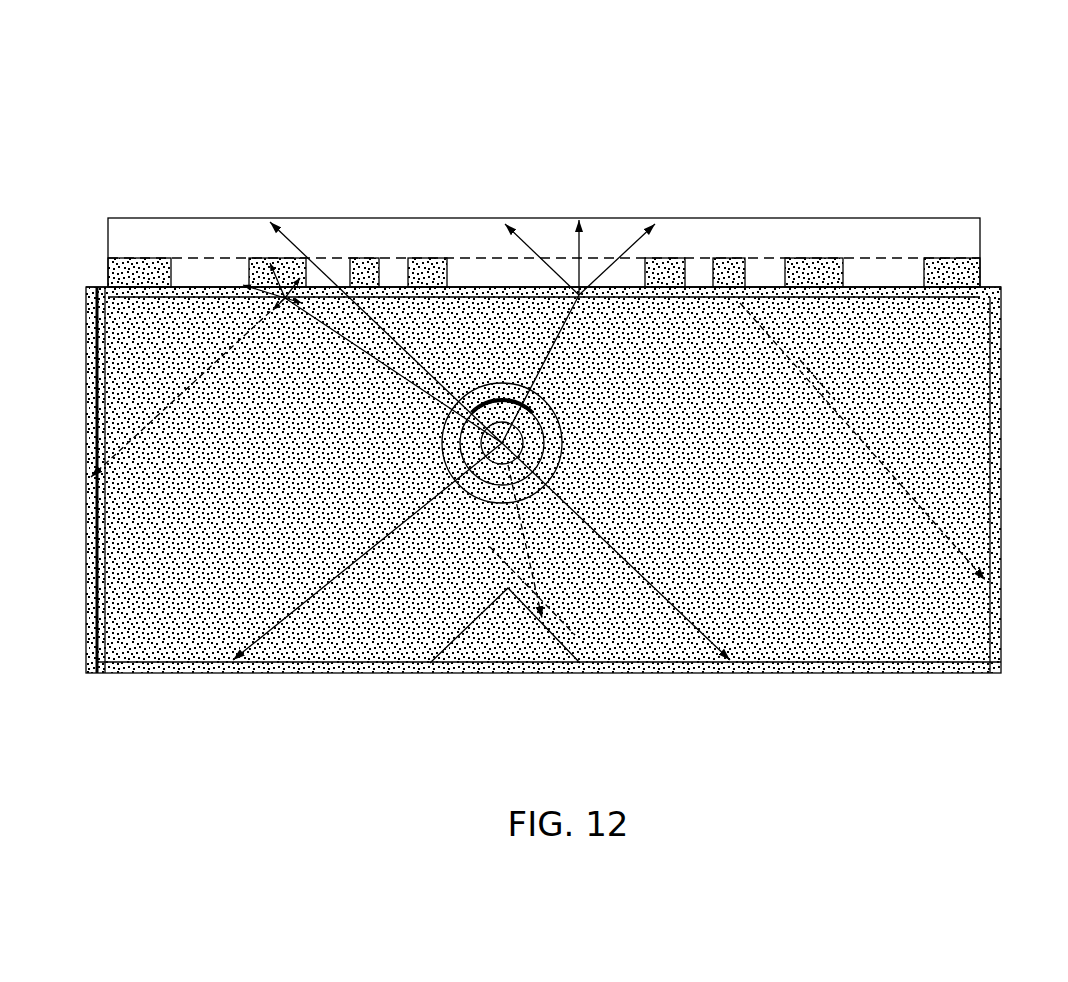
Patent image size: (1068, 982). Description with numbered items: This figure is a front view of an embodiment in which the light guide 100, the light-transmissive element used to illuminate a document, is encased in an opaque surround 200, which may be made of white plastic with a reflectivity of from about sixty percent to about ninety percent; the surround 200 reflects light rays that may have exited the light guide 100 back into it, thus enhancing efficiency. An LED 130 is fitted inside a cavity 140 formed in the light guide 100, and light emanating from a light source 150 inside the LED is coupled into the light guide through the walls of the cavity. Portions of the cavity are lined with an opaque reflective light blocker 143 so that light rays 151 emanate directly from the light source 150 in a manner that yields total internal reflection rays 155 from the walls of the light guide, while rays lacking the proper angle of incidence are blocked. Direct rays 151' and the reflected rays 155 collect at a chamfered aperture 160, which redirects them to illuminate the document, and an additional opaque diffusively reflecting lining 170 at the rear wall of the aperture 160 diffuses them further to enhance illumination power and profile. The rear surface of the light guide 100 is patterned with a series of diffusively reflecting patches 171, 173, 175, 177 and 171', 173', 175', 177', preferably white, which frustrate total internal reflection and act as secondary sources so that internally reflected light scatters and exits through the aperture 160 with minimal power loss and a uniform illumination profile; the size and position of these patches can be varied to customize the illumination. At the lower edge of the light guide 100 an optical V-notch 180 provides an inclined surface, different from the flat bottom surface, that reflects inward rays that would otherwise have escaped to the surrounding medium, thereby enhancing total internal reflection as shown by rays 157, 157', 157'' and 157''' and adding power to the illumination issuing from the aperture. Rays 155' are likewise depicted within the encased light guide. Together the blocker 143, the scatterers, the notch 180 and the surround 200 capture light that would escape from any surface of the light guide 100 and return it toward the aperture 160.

The light guide 100 is at (702, 148).
The LED 130 is at (558, 432).
The cavity 140 is at (560, 478).
The light blocker 143 is at (510, 388).
The light source 150 is at (545, 407).
The light ray 151 is at (499, 440).
The direct ray 151' is at (365, 300).
The total internal reflection ray 155 is at (118, 480).
The inner wall layer 155' is at (546, 480).
The ray 157 is at (489, 541).
The ray 157' is at (548, 591).
The ray 157'' is at (862, 441).
The ray 157''' is at (865, 382).
The chamfered aperture 160 is at (878, 228).
The diffusively reflecting lining 170 is at (985, 282).
The diffusively reflecting patch 171 is at (143, 237).
The diffusively reflecting patch 171' is at (959, 237).
The diffusively reflecting patch 173 is at (290, 237).
The diffusively reflecting patch 173' is at (817, 237).
The diffusively reflecting patch 175 is at (373, 237).
The diffusively reflecting patch 175' is at (738, 237).
The diffusively reflecting patch 177 is at (434, 237).
The diffusively reflecting patch 177' is at (672, 237).
The optical V-notch 180 is at (453, 640).
The opaque surround 200 is at (968, 425).